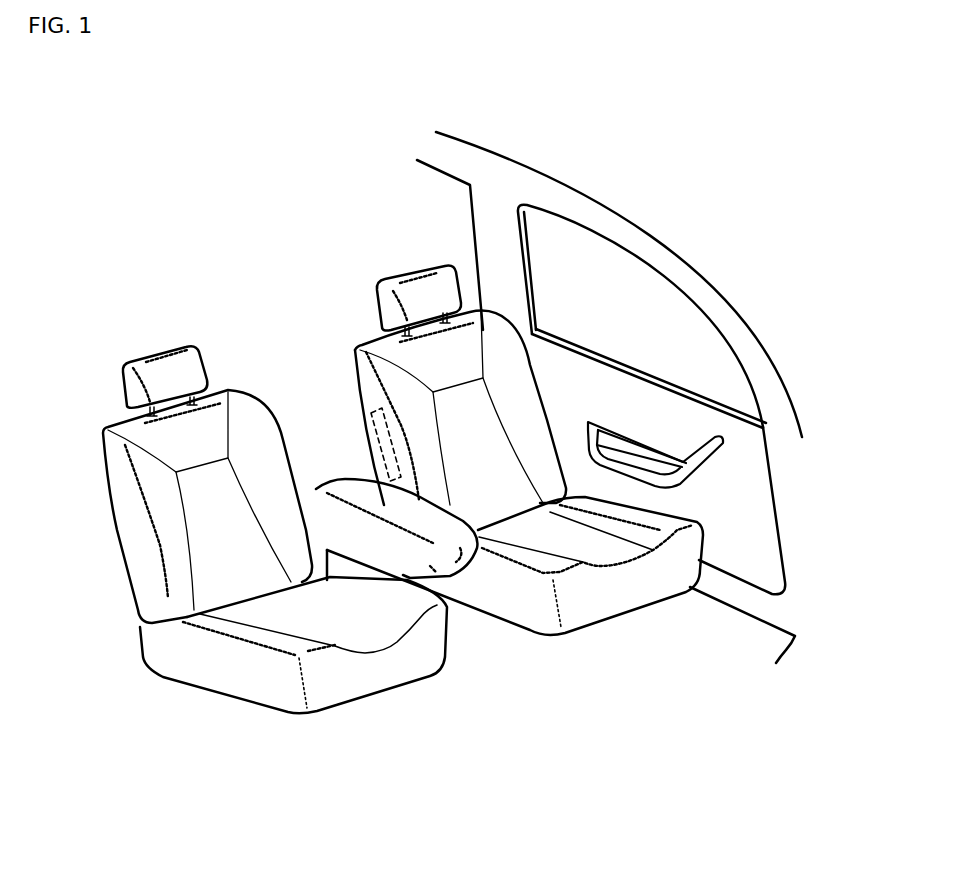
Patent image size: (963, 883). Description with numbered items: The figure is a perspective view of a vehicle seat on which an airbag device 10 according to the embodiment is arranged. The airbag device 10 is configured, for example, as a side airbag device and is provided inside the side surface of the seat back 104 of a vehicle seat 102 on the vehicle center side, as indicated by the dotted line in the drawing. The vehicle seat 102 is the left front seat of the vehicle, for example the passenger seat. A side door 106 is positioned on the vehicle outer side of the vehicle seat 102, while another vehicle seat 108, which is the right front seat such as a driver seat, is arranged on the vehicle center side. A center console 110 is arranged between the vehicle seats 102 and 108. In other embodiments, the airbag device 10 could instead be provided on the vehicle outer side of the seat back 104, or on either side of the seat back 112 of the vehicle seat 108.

The airbag device 10 is at (377, 412).
The vehicle seat 102 is at (616, 601).
The seat back 104 is at (505, 348).
The side door 106 is at (650, 412).
The vehicle seat 108 is at (366, 676).
The center console 110 is at (343, 485).
The seat back 112 is at (222, 573).